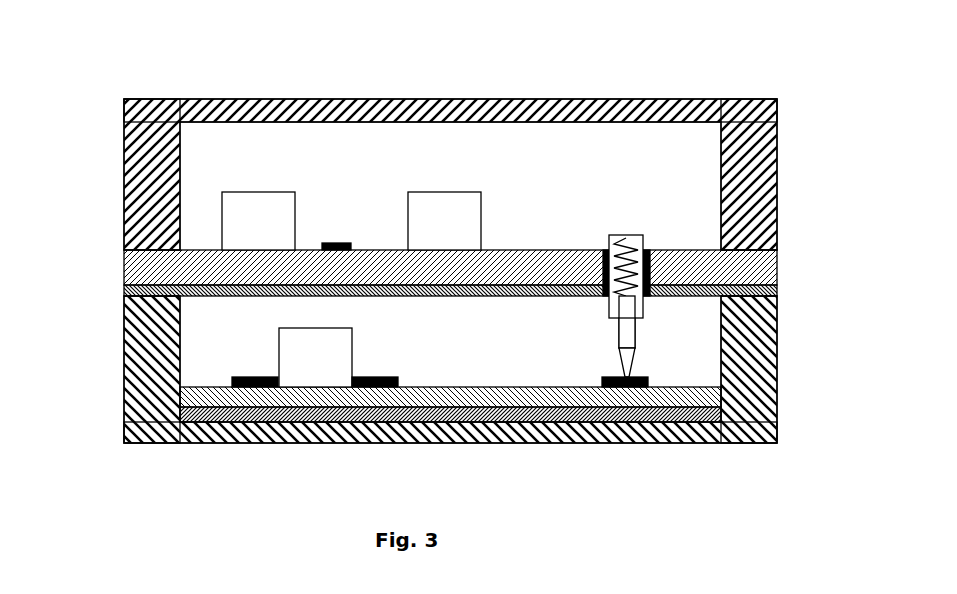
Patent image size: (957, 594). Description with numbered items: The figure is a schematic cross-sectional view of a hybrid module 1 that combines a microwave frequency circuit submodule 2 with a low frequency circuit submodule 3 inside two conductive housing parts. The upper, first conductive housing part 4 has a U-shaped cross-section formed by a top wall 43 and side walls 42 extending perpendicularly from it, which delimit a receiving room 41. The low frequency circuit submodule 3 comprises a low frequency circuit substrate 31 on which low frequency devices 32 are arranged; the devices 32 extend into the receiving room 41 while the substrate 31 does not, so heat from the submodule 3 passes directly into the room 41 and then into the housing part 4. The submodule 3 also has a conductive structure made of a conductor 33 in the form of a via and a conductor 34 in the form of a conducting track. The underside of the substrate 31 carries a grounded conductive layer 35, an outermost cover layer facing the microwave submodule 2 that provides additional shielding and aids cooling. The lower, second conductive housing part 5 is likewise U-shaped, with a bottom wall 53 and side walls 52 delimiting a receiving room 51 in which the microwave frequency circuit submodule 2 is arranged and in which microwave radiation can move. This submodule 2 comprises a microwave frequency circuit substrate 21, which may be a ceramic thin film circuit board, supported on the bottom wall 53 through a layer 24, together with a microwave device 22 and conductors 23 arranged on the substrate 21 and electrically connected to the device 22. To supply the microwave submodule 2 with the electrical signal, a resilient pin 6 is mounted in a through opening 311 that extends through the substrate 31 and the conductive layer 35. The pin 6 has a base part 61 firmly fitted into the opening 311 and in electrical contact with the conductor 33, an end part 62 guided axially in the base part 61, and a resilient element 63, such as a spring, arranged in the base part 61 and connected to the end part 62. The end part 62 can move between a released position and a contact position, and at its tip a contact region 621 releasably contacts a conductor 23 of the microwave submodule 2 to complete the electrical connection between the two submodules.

The hybrid module 1 is at (178, 45).
The microwave frequency circuit submodule 2 is at (250, 308).
The low frequency circuit submodule 3 is at (545, 158).
The first conductive housing part 4 is at (727, 81).
The second conductive housing part 5 is at (130, 459).
The resilient pin 6 is at (625, 273).
The microwave frequency circuit substrate 21 is at (430, 389).
The microwave device 22 is at (335, 348).
The conductor 23 is at (253, 377).
The layer 24 is at (472, 417).
The low frequency circuit substrate 31 is at (767, 268).
The low frequency device 32 is at (258, 217).
The conductor 33 is at (643, 252).
The conductor 34 is at (335, 243).
The conductive layer 35 is at (777, 290).
The receiving room 41 is at (384, 170).
The side wall 42 is at (148, 190).
The wall 43 is at (399, 108).
The receiving room 51 is at (458, 333).
The side wall 52 is at (145, 368).
The wall 53 is at (318, 433).
The base part 61 is at (643, 303).
The end part 62 is at (620, 340).
The resilient element 63 is at (622, 243).
The opening 311 is at (603, 238).
The contact region 621 is at (628, 370).